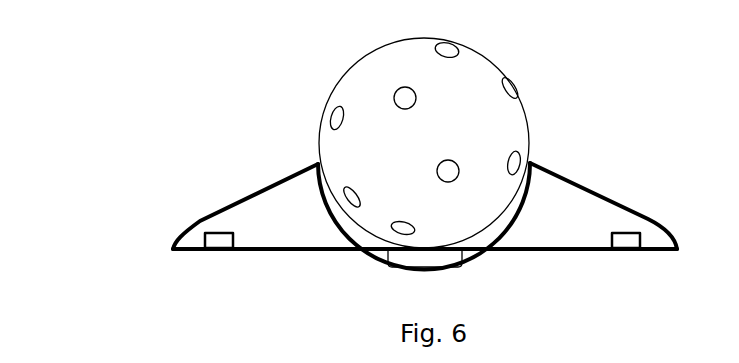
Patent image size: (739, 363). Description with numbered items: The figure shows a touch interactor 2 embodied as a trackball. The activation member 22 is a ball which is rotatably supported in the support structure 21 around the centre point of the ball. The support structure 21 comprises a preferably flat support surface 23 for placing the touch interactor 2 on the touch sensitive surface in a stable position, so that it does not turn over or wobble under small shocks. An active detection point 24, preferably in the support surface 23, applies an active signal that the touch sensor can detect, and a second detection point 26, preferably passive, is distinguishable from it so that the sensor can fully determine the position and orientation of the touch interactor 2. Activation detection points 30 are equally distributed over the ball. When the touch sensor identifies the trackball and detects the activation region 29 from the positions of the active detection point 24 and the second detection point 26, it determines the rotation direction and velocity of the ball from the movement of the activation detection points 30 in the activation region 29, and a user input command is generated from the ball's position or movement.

The touch interactor 2 is at (85, 153).
The support structure 21 is at (563, 215).
The activation member 22 is at (392, 166).
The support surface 23 is at (290, 252).
The active detection point 24 is at (219, 241).
The second detection point 26 is at (611, 251).
The activation region 29 is at (425, 268).
The activation detection points 30 is at (405, 220).